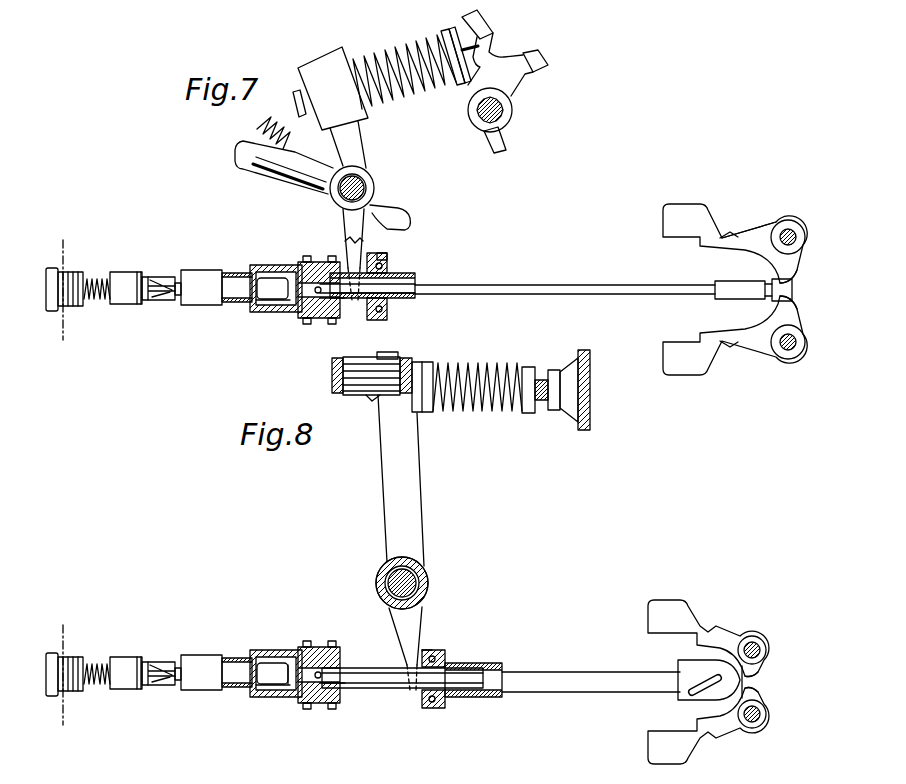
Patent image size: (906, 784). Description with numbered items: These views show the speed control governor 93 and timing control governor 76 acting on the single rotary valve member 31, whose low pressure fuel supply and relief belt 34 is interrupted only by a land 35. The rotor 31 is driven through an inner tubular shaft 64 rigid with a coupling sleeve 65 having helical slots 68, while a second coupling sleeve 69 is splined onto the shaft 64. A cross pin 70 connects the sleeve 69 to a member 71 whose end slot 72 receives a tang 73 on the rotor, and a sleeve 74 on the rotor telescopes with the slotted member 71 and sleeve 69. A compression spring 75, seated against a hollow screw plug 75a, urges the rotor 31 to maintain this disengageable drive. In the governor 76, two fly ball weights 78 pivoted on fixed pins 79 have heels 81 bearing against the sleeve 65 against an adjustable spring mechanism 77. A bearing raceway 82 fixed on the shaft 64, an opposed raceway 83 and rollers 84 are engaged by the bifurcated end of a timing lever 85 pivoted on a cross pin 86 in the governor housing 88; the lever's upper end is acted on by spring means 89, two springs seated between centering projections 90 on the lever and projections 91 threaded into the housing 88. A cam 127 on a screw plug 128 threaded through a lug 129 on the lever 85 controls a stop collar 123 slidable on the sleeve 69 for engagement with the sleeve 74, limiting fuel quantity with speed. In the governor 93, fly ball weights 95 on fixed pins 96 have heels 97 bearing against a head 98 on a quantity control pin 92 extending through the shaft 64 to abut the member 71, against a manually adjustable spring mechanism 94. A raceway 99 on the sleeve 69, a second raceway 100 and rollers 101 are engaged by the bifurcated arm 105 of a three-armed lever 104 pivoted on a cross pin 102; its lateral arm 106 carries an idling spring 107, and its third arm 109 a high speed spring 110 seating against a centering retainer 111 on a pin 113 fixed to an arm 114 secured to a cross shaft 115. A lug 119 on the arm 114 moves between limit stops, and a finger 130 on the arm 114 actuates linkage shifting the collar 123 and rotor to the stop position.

In FIG. 7, the rotary valve member 31 is at (205, 277).
In FIG. 8, the rotary valve member 31 is at (201, 662).
In FIG. 7, the low pressure fuel supply and relief belt 34 is at (162, 298).
In FIG. 8, the low pressure fuel supply and relief belt 34 is at (156, 695).
In FIG. 7, the land 35 is at (156, 284).
In FIG. 8, the land 35 is at (158, 661).
In FIG. 7, the inner tubular shaft 64 is at (405, 283).
In FIG. 8, the inner tubular shaft 64 is at (565, 670).
In FIG. 8, the coupling sleeve 65 is at (685, 662).
In FIG. 8, the helical slots 68 is at (682, 688).
In FIG. 7, the second coupling sleeve 69 is at (348, 303).
In FIG. 8, the second coupling sleeve 69 is at (351, 701).
In FIG. 7, the cross pin 70 is at (320, 268).
In FIG. 8, the cross pin 70 is at (319, 666).
In FIG. 8, the slotted member 71 is at (283, 693).
In FIG. 7, the end slot 72 is at (268, 308).
In FIG. 8, the end slot 72 is at (268, 702).
In FIG. 7, the tang 73 is at (258, 300).
In FIG. 8, the tang 73 is at (272, 655).
In FIG. 7, the sleeve 74 is at (258, 270).
In FIG. 8, the sleeve 74 is at (276, 661).
In FIG. 7, the coiled compression spring 75 is at (96, 282).
In FIG. 8, the coiled compression spring 75 is at (97, 662).
In FIG. 7, the hollow screw plug 75a is at (68, 274).
In FIG. 8, the hollow screw plug 75a is at (67, 674).
In FIG. 8, the timing control governor 76 is at (769, 628).
In FIG. 8, the adjustable spring mechanism 77 is at (458, 425).
In FIG. 8, the fly ball weights 78 is at (676, 605).
In FIG. 8, the fixed pins 79 is at (766, 650).
In FIG. 8, the heels 81 is at (766, 690).
In FIG. 8, the annular bearing raceway 82 is at (447, 660).
In FIG. 8, the second raceway 83 is at (426, 652).
In FIG. 8, the anti-friction rollers 84 is at (434, 657).
In FIG. 8, the timing lever 85 is at (420, 524).
In FIG. 8, the cross pin 86 is at (428, 583).
In FIG. 8, the governor housing 88 is at (584, 414).
In FIG. 8, the spring means 89 is at (524, 368).
In FIG. 8, the centering projections 90 is at (470, 362).
In FIG. 8, the centering projections 91 is at (530, 412).
In FIG. 7, the quantity control pin 92 is at (490, 285).
In FIG. 8, the quantity control pin 92 is at (338, 672).
In FIG. 7, the speed control governor 93 is at (750, 221).
In FIG. 7, the manually adjustable spring mechanism 94 is at (426, 104).
In FIG. 7, the fly ball weights 95 is at (673, 207).
In FIG. 7, the fixed pins 96 is at (788, 229).
In FIG. 7, the heels 97 is at (796, 268).
In FIG. 7, the head 98 is at (772, 286).
In FIG. 7, the raceway 99 is at (390, 268).
In FIG. 7, the second raceway 100 is at (375, 257).
In FIG. 7, the anti-friction rollers 101 is at (388, 314).
In FIG. 7, the cross pin 102 is at (374, 188).
In FIG. 7, the three-armed lever 104 is at (342, 213).
In FIG. 7, the arm 105 is at (344, 229).
In FIG. 7, the lateral arm 106 is at (252, 163).
In FIG. 7, the coil compression spring 107 is at (258, 127).
In FIG. 7, the third arm 109 is at (362, 148).
In FIG. 7, the coil compression spring 110 is at (398, 41).
In FIG. 7, the centering retainer 111 is at (446, 33).
In FIG. 7, the pin 113 is at (470, 50).
In FIG. 7, the arm 114 is at (495, 50).
In FIG. 7, the cross shaft 115 is at (502, 110).
In FIG. 7, the lug 119 is at (545, 64).
In FIG. 7, the stop collar 123 is at (320, 312).
In FIG. 8, the stop collar 123 is at (332, 718).
In FIG. 8, the cam 127 is at (372, 402).
In FIG. 8, the screw plug 128 is at (398, 357).
In FIG. 8, the lug 129 is at (332, 383).
In FIG. 7, the finger 130 is at (496, 140).